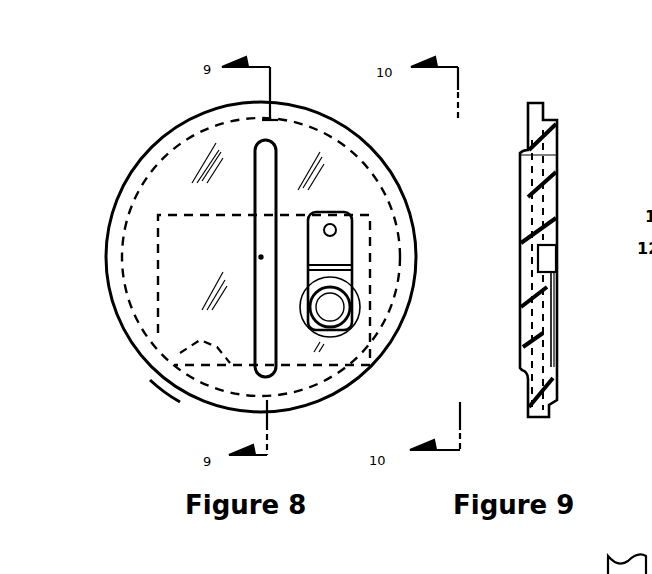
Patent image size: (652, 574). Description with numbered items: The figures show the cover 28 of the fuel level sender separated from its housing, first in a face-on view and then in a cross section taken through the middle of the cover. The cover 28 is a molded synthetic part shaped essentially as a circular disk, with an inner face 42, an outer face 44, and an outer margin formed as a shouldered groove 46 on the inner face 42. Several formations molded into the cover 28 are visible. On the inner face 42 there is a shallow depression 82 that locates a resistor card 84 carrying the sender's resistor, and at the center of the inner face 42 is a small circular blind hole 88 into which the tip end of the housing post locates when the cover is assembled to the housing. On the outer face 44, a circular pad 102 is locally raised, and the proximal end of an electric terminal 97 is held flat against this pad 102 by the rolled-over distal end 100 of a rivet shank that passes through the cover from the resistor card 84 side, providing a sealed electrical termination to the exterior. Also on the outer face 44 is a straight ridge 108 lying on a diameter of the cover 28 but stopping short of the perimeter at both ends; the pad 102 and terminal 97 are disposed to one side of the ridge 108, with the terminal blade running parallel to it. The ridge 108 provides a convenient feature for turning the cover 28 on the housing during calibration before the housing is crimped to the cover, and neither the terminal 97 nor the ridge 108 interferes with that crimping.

In FIG. 8, the cover 28 is at (173, 134).
In FIG. 9, the cover 28 is at (537, 103).
In FIG. 8, the outer face 44 is at (173, 191).
In FIG. 8, the straight ridge 108 is at (273, 147).
In FIG. 9, the straight ridge 108 is at (522, 154).
In FIG. 8, the electric terminal 97 is at (340, 213).
In FIG. 8, the distal end of the rivet shank 100 is at (361, 294).
In FIG. 8, the circular pad 102 is at (345, 334).
In FIG. 8, the shallow depression 82 is at (167, 380).
In FIG. 9, the shallow depression 82 is at (551, 307).
In FIG. 8, the resistor card 84 is at (245, 363).
In FIG. 9, the resistor card 84 is at (556, 337).
In FIG. 9, the shouldered groove 46 is at (548, 118).
In FIG. 9, the inner face 42 is at (558, 153).
In FIG. 9, the blind hole 88 is at (557, 258).